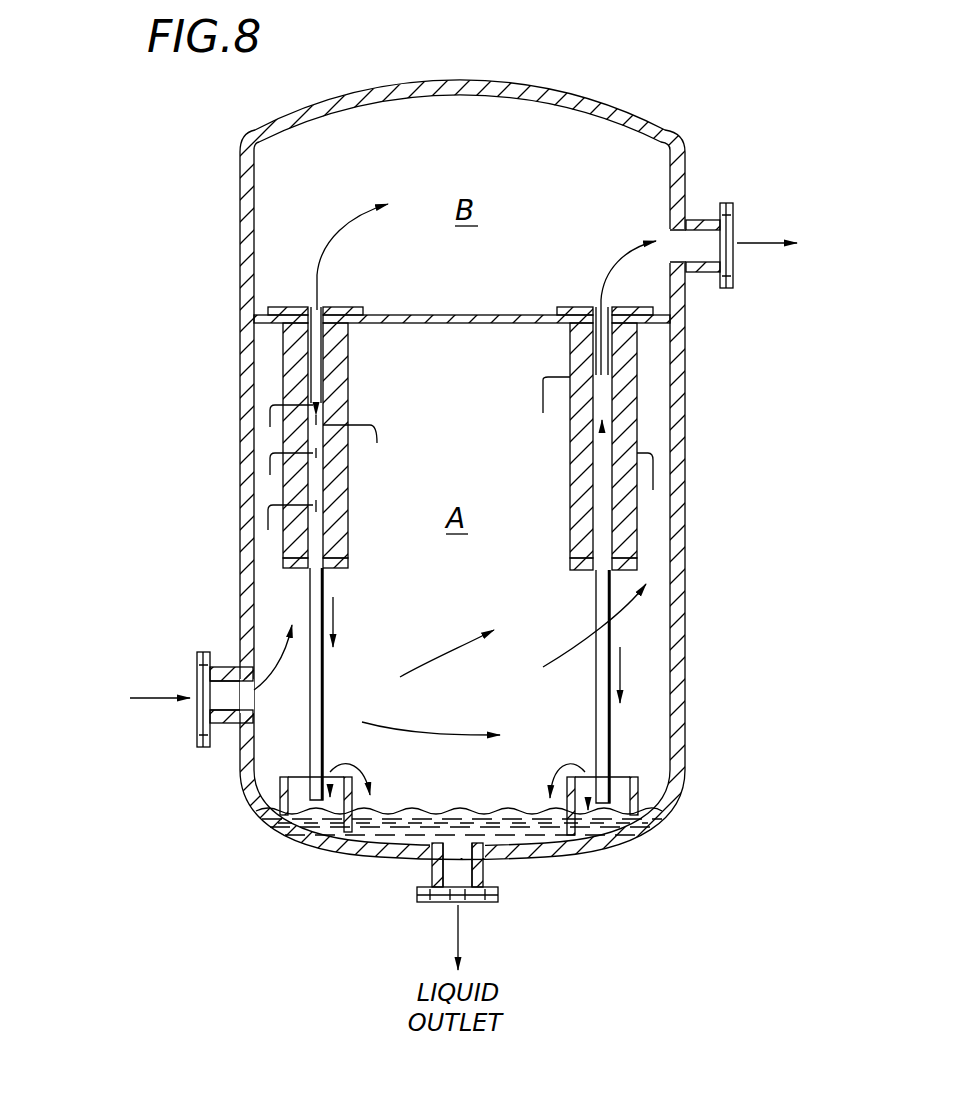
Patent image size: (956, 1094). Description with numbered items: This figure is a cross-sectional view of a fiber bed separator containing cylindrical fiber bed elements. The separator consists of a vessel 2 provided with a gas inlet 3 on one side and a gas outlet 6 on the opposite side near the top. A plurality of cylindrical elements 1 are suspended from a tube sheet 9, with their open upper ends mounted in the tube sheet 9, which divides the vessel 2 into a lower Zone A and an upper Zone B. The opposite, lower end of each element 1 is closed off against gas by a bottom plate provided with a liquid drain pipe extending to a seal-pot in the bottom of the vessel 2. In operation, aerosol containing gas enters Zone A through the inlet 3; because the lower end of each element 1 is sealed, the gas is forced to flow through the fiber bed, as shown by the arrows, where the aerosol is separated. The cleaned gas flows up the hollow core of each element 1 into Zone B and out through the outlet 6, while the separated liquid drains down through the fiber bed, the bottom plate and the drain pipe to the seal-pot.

The cylindrical element 1 is at (344, 553).
The vessel 2 is at (687, 470).
The gas inlet 3 is at (197, 673).
The gas outlet 6 is at (733, 223).
The tube sheet 9 is at (423, 314).